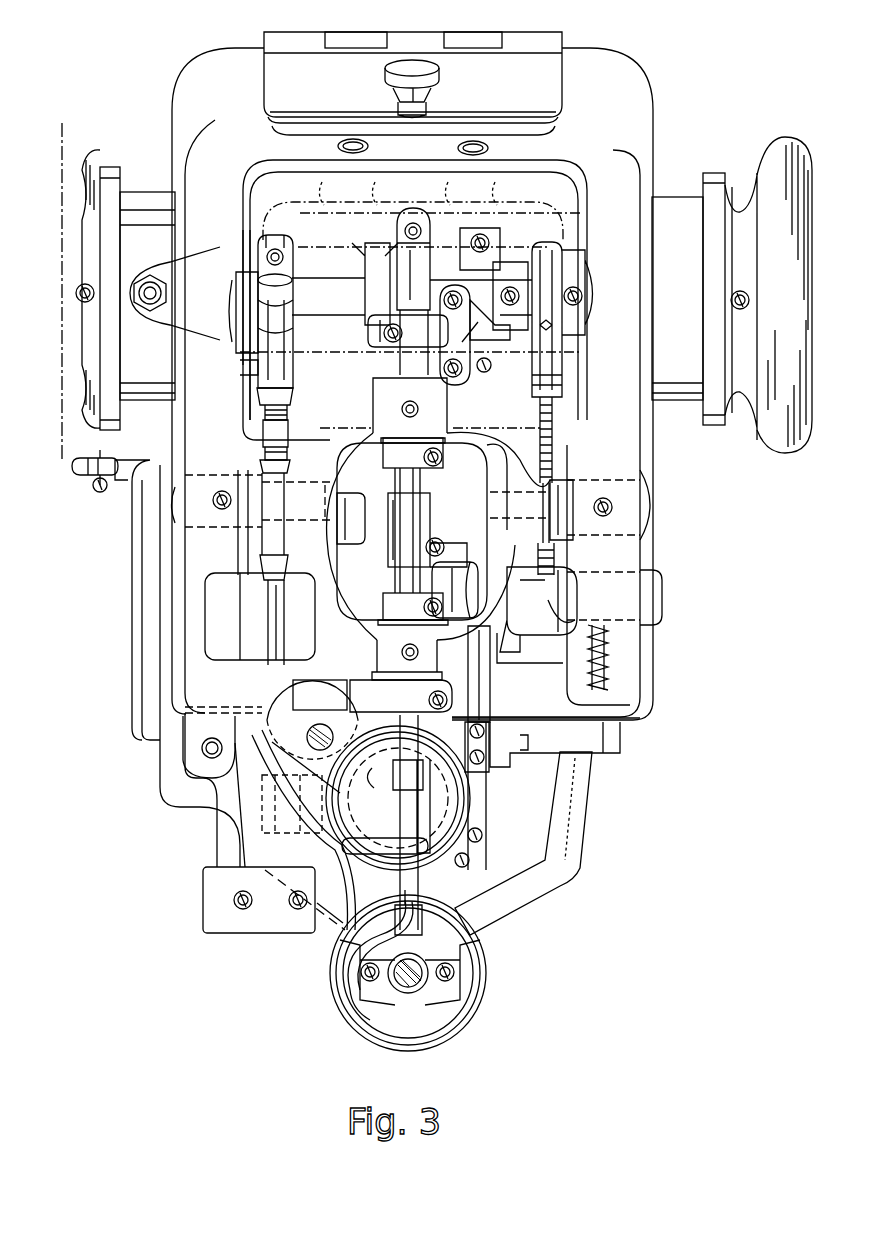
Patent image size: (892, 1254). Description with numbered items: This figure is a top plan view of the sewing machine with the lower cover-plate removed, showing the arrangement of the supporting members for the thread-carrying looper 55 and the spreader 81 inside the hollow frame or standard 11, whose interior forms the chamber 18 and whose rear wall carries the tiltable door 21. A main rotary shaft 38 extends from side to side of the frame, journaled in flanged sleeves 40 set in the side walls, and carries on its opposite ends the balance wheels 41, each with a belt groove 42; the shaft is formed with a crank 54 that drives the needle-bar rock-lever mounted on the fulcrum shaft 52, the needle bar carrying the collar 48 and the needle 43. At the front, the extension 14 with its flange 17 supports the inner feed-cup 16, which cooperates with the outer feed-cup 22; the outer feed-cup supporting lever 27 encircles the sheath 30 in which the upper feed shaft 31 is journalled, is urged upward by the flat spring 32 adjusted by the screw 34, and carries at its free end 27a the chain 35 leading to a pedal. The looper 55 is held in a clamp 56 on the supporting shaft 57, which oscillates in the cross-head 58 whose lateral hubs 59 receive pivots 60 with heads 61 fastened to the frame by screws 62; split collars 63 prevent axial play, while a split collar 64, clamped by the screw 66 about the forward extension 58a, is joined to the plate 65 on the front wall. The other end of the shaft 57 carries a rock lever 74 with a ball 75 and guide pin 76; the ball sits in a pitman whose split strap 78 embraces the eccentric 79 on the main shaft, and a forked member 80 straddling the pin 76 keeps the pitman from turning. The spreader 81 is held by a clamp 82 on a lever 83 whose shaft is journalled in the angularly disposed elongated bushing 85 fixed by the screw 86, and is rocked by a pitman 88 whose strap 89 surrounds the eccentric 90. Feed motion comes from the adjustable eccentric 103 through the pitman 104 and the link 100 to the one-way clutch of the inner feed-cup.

The base-portion or standard 11 is at (622, 150).
The extension 14 is at (552, 860).
The inner feed-cup 16 is at (362, 865).
The flange 17 is at (592, 746).
The chamber 18 is at (262, 192).
The tiltable door 21 is at (527, 67).
The outer feed-cup 22 is at (358, 1036).
The outer feed-cup supporting lever 27 is at (150, 757).
The free end of the lever 27a is at (85, 458).
The sheath 30 is at (408, 993).
The upper feed shaft 31 is at (410, 993).
The flat spring 32 is at (141, 533).
The screw 34 is at (162, 294).
The chain 35 is at (100, 487).
The main rotary shaft 38 is at (332, 292).
The flanged sleeve 40 is at (142, 215).
The balance wheel 41 is at (64, 156).
The belt groove 42 is at (78, 182).
The needle 43 is at (432, 957).
The collar 48 is at (435, 540).
The fulcrum shaft 52 is at (300, 582).
The crank 54 is at (376, 250).
The looper 55 is at (345, 942).
The clamp 56 is at (398, 787).
The supporting shaft 57 is at (421, 492).
The cross-head 58 is at (357, 434).
The forward extension 58a is at (383, 667).
The lateral hub 59 is at (268, 522).
The pivot 60 is at (303, 496).
The pivot head 61 is at (178, 505).
The screw 62 is at (220, 490).
The split collar 63 is at (392, 462).
The split collar 64 is at (348, 692).
The plate 65 is at (388, 726).
The screw 66 is at (470, 700).
The rock lever 74 is at (396, 346).
The ball 75 is at (484, 372).
The guide pin 76 is at (500, 345).
The split strap 78 is at (483, 237).
The eccentric 79 is at (500, 268).
The forked member 80 is at (493, 357).
The spreader 81 is at (430, 925).
The clamp 82 is at (490, 772).
The lever 83 is at (478, 650).
The elongated bushing 85 is at (645, 605).
The screw 86 is at (612, 672).
The pitman 88 is at (542, 440).
The strap 89 is at (548, 348).
The eccentric 90 is at (582, 268).
The link 100 is at (270, 605).
The adjustable eccentric 103 is at (258, 330).
The pitman 104 is at (267, 432).